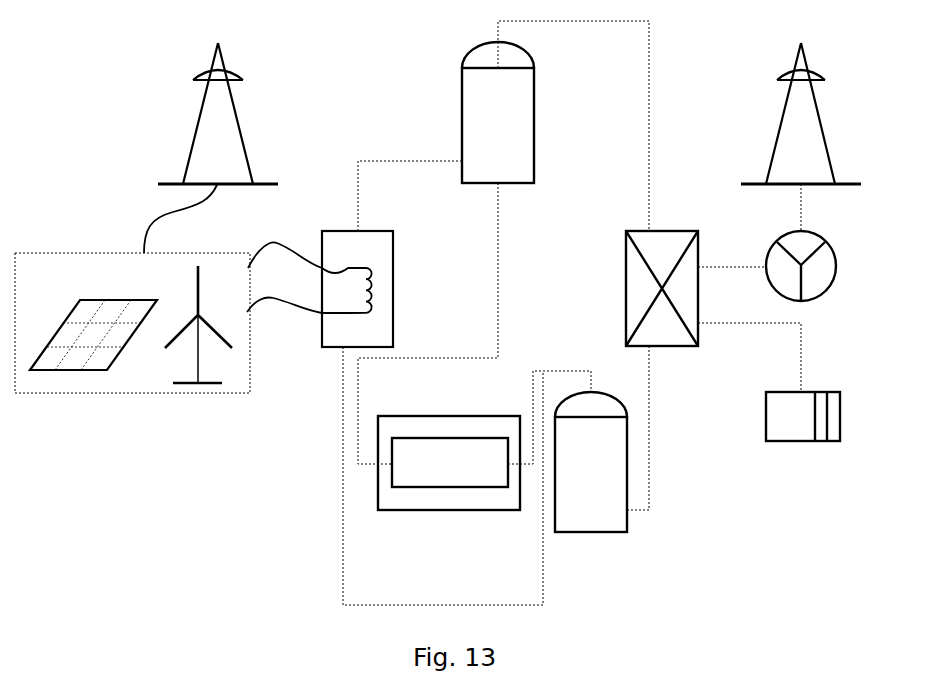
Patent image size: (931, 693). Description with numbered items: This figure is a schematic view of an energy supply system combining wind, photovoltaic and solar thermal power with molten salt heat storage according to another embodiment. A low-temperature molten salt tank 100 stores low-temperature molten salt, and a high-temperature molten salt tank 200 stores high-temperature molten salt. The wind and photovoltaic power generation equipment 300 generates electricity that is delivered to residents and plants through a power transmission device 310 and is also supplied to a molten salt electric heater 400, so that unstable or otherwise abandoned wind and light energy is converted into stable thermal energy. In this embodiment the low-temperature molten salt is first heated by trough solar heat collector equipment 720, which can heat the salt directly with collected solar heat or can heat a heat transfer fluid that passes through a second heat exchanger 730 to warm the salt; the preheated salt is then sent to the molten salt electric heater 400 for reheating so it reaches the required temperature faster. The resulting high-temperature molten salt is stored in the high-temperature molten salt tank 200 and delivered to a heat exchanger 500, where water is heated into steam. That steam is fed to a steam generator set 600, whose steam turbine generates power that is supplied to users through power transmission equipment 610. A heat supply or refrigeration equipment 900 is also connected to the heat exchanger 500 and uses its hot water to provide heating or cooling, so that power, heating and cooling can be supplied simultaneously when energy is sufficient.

The low-temperature molten salt tank 100 is at (592, 510).
The high-temperature molten salt tank 200 is at (485, 105).
The wind and photovoltaic power generation equipment 300 is at (132, 385).
The power transmission device 310 is at (230, 137).
The molten salt electric heater 400 is at (377, 287).
The heat exchanger 500 is at (680, 347).
The steam generator set 600 is at (812, 275).
The power transmission equipment 610 is at (803, 137).
The trough solar heat collector equipment 720 is at (450, 447).
The second heat exchanger 730 is at (448, 511).
The heat supply or refrigeration equipment 900 is at (796, 425).